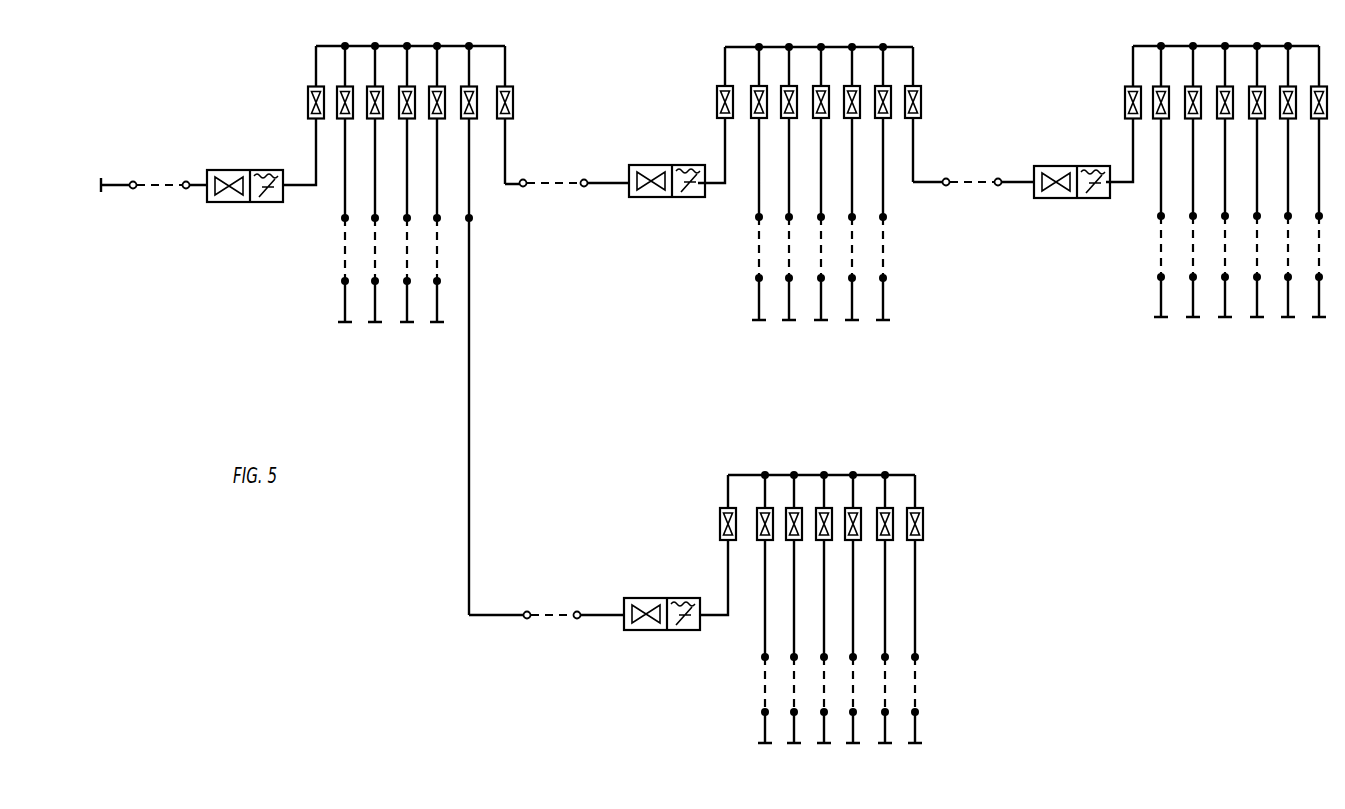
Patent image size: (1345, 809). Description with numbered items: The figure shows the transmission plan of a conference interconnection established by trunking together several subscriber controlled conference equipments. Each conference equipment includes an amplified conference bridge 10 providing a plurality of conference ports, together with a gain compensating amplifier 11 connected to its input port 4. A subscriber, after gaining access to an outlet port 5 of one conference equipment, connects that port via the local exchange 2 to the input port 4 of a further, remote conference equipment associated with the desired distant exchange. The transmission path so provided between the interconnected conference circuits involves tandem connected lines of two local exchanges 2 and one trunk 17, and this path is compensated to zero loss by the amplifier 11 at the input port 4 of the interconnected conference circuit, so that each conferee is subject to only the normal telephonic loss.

The local exchange 2 is at (333, 205).
The input port 4 is at (567, 385).
The outlet port 5 is at (339, 189).
The amplified conference bridge 10 is at (511, 52).
The gain compensating amplifier 11 is at (234, 168).
The trunk 17 is at (193, 178).